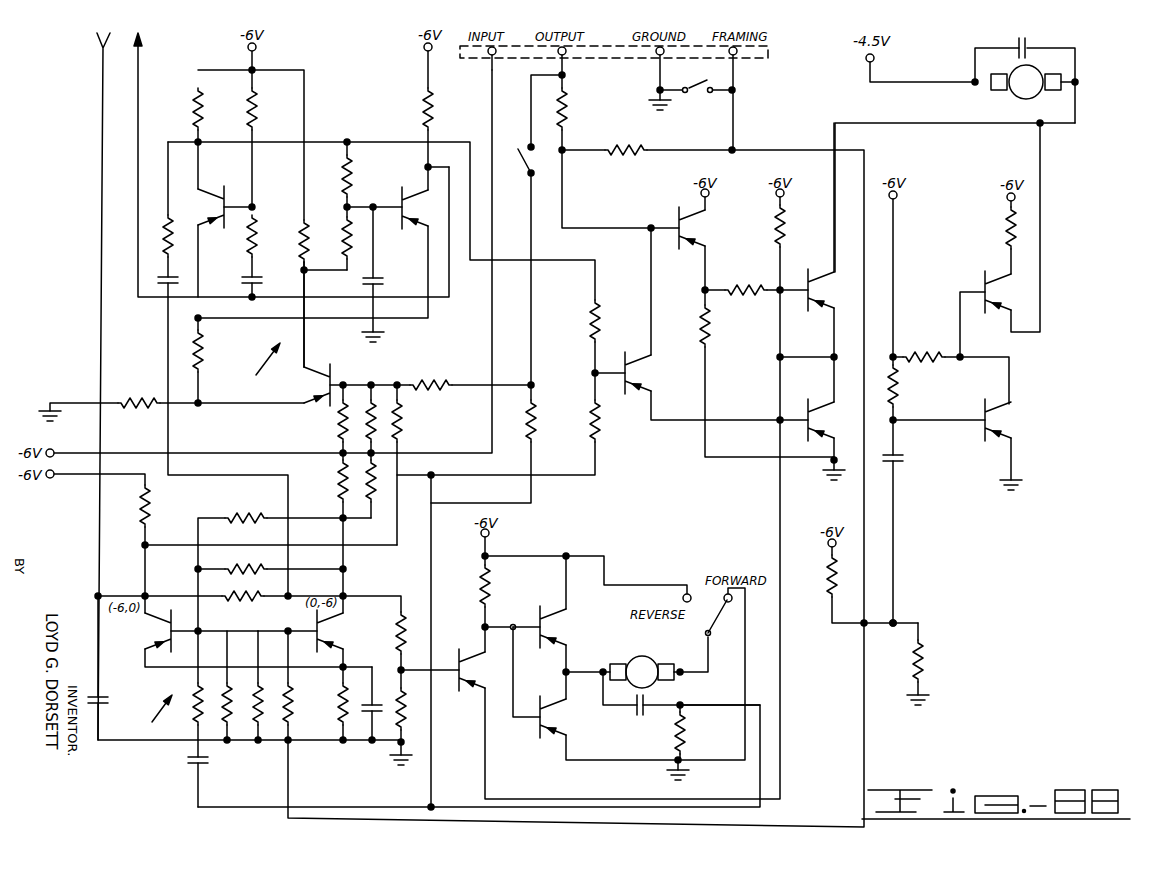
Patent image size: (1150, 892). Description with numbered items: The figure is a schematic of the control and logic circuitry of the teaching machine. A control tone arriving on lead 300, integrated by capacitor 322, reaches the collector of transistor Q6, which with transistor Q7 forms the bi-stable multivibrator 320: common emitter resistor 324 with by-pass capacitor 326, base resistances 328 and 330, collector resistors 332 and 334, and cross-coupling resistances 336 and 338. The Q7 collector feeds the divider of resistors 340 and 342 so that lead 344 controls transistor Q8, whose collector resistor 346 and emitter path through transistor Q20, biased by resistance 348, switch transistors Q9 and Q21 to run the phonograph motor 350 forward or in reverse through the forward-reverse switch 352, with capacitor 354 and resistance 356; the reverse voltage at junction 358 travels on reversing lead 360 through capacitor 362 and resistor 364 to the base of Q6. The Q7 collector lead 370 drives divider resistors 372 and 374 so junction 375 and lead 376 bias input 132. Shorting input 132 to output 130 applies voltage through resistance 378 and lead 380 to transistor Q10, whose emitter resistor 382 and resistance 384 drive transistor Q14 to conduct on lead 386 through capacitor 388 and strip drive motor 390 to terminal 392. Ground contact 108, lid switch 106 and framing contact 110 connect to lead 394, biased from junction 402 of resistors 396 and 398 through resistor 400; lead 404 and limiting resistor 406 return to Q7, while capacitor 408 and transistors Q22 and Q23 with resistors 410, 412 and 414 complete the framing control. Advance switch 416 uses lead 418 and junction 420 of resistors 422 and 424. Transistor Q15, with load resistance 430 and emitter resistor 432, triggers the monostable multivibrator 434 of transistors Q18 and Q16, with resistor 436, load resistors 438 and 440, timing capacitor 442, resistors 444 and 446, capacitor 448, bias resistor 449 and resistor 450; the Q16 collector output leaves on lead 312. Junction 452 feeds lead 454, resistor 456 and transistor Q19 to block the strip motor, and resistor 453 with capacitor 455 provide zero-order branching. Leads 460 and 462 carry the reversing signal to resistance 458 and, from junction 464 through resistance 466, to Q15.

The lead 300 is at (103, 80).
The lead 312 is at (141, 70).
The load resistor 440 is at (192, 110).
The bias resistor 449 is at (259, 108).
The junction 452 is at (199, 142).
The lead 454 is at (347, 142).
The resistor 453 is at (162, 240).
The capacitor 455 is at (158, 285).
The resistor 444 is at (247, 244).
The timing capacitor 442 is at (242, 284).
The load resistance 430 is at (301, 246).
The resistor 446 is at (342, 188).
The resistor 450 is at (340, 230).
The transient suppressing capacitor 448 is at (371, 286).
The load resistor 438 is at (424, 110).
The lead 376 is at (490, 121).
The input 132 is at (490, 57).
The output 130 is at (566, 62).
The ground contact 108 is at (660, 58).
The lid switch 106 is at (705, 96).
The framing contact 110 is at (738, 62).
The resistance 378 is at (568, 112).
The resistor 400 is at (628, 162).
The lead 380 is at (565, 224).
The visual strip advance switch 416 is at (526, 162).
The resistance 384 is at (748, 285).
The resistor 382 is at (703, 337).
The resistor 456 is at (600, 314).
The input resistance 458 is at (600, 426).
The terminal 392 is at (866, 64).
The visual strip drive motor 390 is at (1018, 99).
The noise suppressor capacitor 388 is at (1015, 45).
The lead 386 is at (925, 123).
The lead 394 is at (806, 152).
The resistance 348 is at (787, 226).
The resistance 412 is at (898, 394).
The resistor 410 is at (936, 352).
The capacitor 408 is at (898, 470).
The resistance 414 is at (1005, 235).
The resistor 398 is at (828, 586).
The junction 402 is at (893, 620).
The resistor 396 is at (925, 666).
The lead 404 is at (866, 735).
The resistor 436 is at (206, 344).
The monostable multivibrator 434 is at (250, 392).
The resistor 432 is at (145, 396).
The divider resistor 424 is at (420, 384).
The junction 375 is at (340, 452).
The resistor 334 is at (340, 496).
The resistor 374 is at (378, 437).
The resistor 372 is at (376, 495).
The resistance 466 is at (402, 420).
The resistor 332 is at (150, 508).
The lead 418 is at (188, 548).
The resistance 336 is at (238, 566).
The lead 370 is at (346, 570).
The resistance 338 is at (242, 603).
The resistor 340 is at (396, 631).
The resistance 328 is at (216, 736).
The resistor 330 is at (268, 706).
The limiting resistor 406 is at (293, 720).
The resistor 324 is at (338, 723).
The by-pass capacitor 326 is at (370, 727).
The integrating capacitor 322 is at (103, 699).
The bi-stable multivibrator 320 is at (148, 736).
The resistor 364 is at (182, 730).
The capacitor 362 is at (196, 769).
The reversing lead 360 is at (218, 807).
The lead 344 is at (411, 665).
The resistor 342 is at (408, 714).
The resistor 346 is at (490, 592).
The phonograph motor 350 is at (646, 657).
The forward-reverse switch 352 is at (725, 624).
The noise reducing capacitor 354 is at (640, 717).
The resistance 356 is at (675, 742).
The junction 358 is at (683, 705).
The lead 460 is at (431, 587).
The voltage divider junction 420 is at (531, 388).
The divider resistor 422 is at (534, 418).
The lead 462 is at (468, 498).
The junction 464 is at (432, 499).
The transistor Q6 is at (153, 644).
The transistor Q7 is at (355, 644).
The transistor Q8 is at (495, 686).
The transistor Q9 is at (578, 639).
The transistor Q10 is at (722, 246).
The transistor Q14 is at (852, 304).
The transistor Q15 is at (315, 398).
The transistor Q16 is at (432, 225).
The transistor Q18 is at (206, 218).
The transistor Q19 is at (667, 388).
The transistor Q20 is at (852, 434).
The transistor Q21 is at (584, 733).
The transistor Q22 is at (1031, 436).
The transistor Q23 is at (1028, 306).